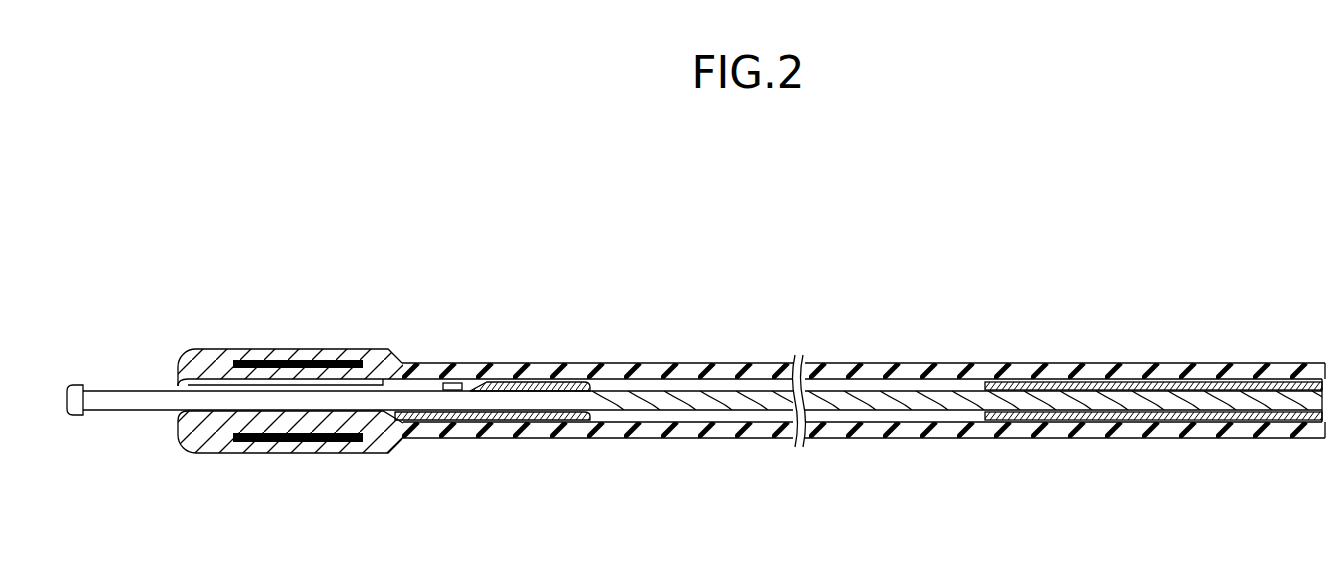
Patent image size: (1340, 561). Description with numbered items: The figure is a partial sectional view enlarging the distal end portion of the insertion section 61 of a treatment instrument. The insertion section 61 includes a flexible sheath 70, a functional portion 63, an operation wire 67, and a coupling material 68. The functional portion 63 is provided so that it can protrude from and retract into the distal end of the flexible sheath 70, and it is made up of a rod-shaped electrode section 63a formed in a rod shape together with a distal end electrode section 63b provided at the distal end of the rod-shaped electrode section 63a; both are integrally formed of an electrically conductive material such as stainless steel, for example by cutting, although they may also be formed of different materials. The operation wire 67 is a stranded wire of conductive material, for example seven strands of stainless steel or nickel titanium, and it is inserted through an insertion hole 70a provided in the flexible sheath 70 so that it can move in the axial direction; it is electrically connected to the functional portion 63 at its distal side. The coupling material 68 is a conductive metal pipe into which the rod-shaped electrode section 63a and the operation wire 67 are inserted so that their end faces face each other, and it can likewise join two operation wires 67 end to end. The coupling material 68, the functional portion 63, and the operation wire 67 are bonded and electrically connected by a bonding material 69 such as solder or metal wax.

The insertion section 61 is at (893, 274).
The functional portion 63 is at (141, 391).
The rod-shaped electrode section 63a is at (127, 410).
The distal end electrode section 63b is at (80, 383).
The operation wire 67 is at (661, 410).
The coupling material 68 is at (546, 417).
The bonding material 69 is at (531, 386).
The flexible sheath 70 is at (601, 440).
The insertion hole 70a is at (843, 418).